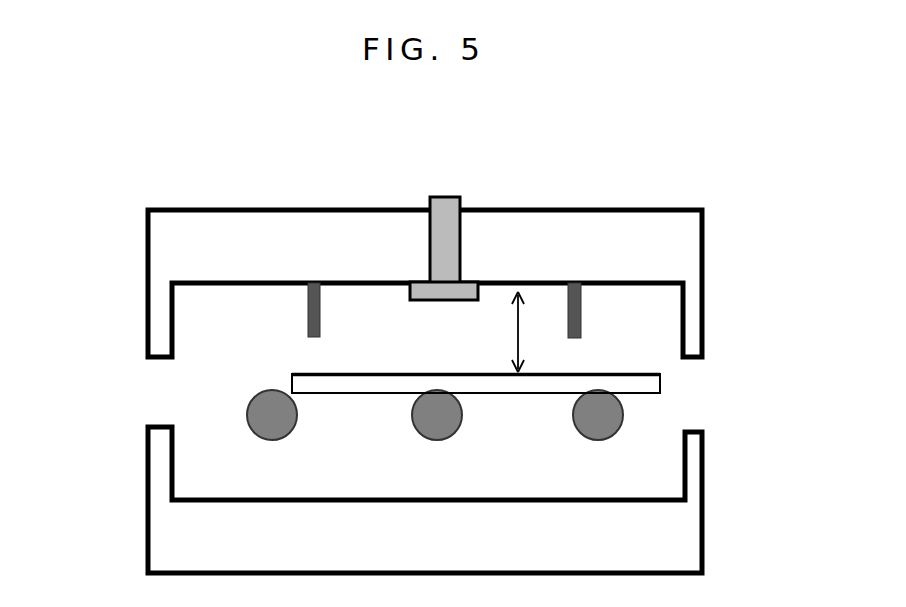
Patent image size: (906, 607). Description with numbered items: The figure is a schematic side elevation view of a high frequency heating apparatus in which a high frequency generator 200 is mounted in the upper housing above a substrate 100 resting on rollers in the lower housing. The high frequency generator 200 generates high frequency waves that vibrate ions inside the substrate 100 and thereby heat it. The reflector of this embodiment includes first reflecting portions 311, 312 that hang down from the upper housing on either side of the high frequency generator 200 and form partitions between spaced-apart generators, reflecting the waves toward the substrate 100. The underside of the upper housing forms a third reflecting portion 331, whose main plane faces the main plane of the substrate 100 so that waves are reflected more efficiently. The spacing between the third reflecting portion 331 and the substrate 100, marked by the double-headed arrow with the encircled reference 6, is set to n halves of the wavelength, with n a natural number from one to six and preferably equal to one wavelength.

The substrate 100 is at (660, 383).
The high frequency generator 200 is at (447, 197).
The first reflecting portion 311 is at (305, 316).
The first reflecting portion 312 is at (582, 315).
The third reflecting portion 331 is at (520, 283).
The gap 6 is at (533, 332).